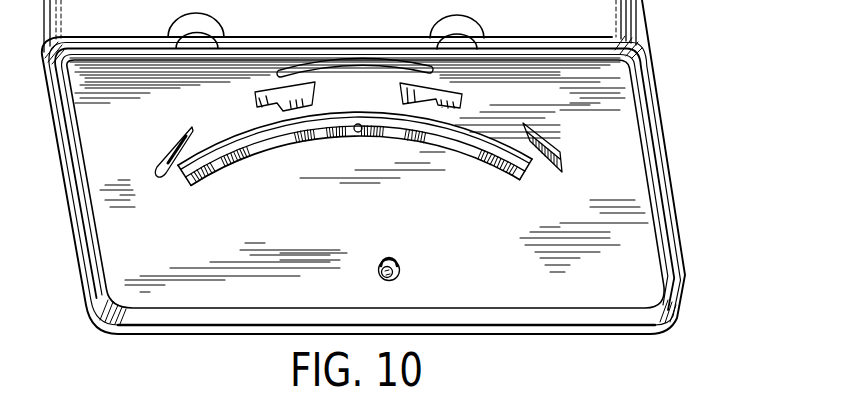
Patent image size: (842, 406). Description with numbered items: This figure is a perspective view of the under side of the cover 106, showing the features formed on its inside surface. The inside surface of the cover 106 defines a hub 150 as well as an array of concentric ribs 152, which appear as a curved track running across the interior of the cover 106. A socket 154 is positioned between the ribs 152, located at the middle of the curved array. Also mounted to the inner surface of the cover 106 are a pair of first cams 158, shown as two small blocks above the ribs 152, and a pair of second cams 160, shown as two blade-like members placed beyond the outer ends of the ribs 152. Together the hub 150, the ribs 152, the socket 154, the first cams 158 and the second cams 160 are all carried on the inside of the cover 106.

The cover 106 is at (663, 163).
The hub 150 is at (401, 278).
The concentric ribs 152 is at (207, 177).
The socket 154 is at (357, 134).
The first cams 158 is at (262, 93).
The second cams 160 is at (167, 146).